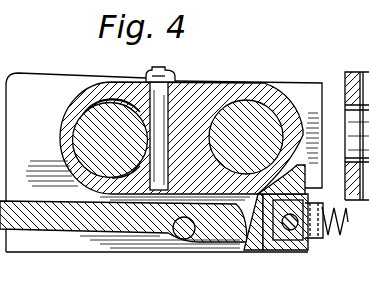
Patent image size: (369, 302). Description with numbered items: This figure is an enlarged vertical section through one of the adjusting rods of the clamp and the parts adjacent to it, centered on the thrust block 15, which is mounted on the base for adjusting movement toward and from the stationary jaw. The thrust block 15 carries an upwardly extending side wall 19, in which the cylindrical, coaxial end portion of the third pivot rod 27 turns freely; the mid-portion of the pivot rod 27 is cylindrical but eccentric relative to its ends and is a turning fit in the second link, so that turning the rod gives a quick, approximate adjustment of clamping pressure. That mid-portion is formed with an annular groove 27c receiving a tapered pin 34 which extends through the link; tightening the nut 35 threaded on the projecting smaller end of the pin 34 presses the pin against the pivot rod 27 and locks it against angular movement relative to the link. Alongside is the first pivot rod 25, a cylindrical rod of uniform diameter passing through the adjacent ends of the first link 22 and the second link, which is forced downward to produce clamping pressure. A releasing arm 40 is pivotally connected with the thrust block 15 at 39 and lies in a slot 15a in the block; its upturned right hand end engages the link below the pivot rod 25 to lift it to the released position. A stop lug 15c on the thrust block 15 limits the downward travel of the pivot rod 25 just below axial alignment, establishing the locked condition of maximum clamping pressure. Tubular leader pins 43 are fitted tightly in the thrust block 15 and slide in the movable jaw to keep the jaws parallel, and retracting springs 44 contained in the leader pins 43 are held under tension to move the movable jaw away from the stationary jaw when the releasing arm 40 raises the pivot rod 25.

The side wall 19 is at (20, 83).
The first link 22 is at (298, 92).
The first pivot rod 25 is at (250, 100).
The third pivot rod 27 is at (88, 110).
The annular groove 27c is at (108, 107).
The tapered pin 34 is at (178, 87).
The nut 35 is at (168, 73).
The releasing arm 40 is at (72, 218).
The slot 15a is at (112, 242).
The pivotal connection 39 is at (178, 240).
The thrust block 15 is at (260, 251).
The stop lug 15c is at (273, 251).
The tubular leader pin 43 is at (322, 239).
The retracting spring 44 is at (338, 227).